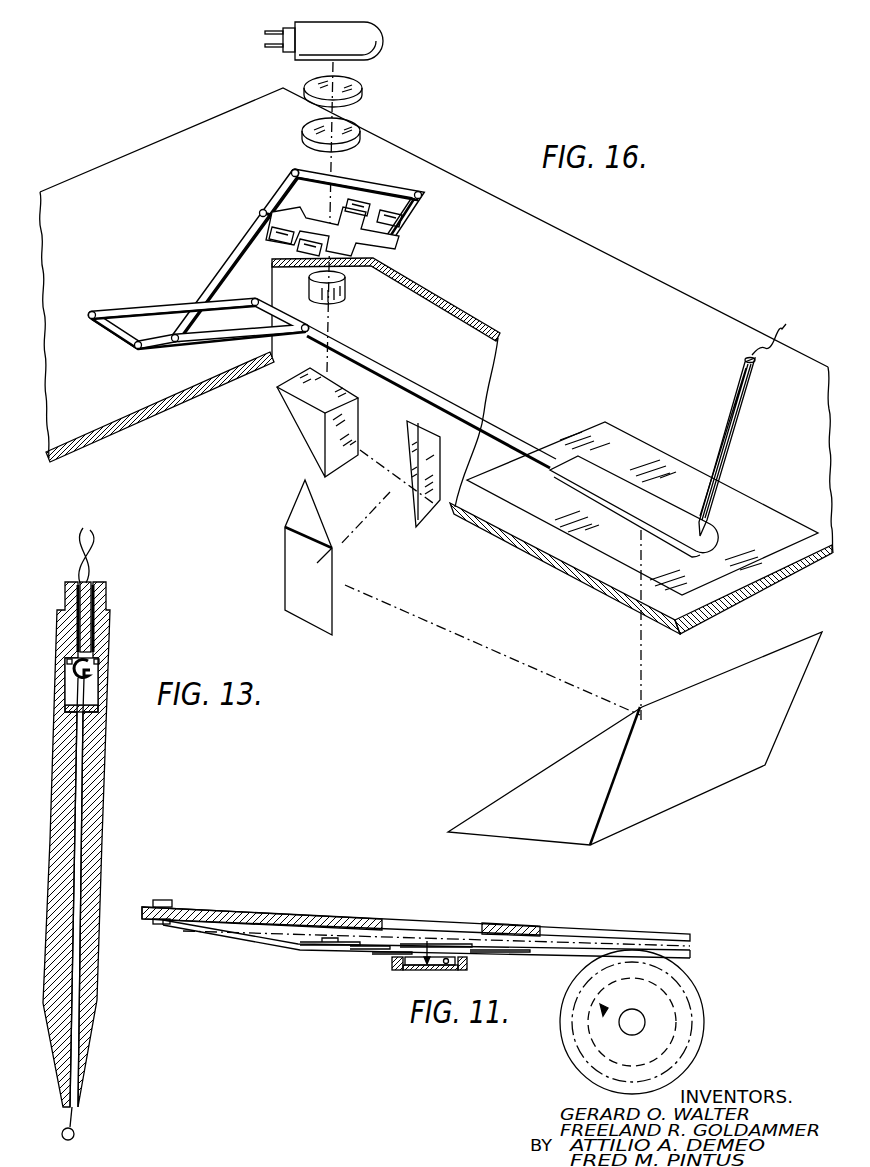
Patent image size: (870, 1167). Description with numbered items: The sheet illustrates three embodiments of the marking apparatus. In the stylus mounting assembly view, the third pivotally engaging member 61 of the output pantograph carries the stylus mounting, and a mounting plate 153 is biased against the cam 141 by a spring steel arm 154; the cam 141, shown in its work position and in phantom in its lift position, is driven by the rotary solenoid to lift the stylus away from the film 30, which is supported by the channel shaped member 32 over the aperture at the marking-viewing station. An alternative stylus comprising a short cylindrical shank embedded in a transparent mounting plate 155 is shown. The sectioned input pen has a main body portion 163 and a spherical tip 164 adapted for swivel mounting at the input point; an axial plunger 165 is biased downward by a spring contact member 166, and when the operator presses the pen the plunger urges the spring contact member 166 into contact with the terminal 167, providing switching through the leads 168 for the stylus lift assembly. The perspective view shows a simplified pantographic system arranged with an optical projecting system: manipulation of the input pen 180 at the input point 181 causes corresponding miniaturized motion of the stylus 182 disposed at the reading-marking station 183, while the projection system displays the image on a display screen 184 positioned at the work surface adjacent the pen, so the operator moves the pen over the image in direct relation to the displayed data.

In FIG. 16, the reading-marking station 183 is at (408, 168).
In FIG. 16, the stylus 182 is at (360, 246).
In FIG. 16, the display screen 184 is at (655, 462).
In FIG. 16, the input pen 180 is at (732, 466).
In FIG. 16, the input point 181 is at (710, 532).
In FIG. 13, the leads 168 is at (96, 559).
In FIG. 13, the terminal 167 is at (100, 660).
In FIG. 13, the spring contact member 166 is at (65, 688).
In FIG. 13, the main body portion 163 is at (97, 800).
In FIG. 13, the axial plunger 165 is at (79, 890).
In FIG. 13, the spherical tip 164 is at (75, 1133).
In FIG. 11, the third pivotally engaging member 61 is at (288, 915).
In FIG. 11, the spring steel arm 154 is at (262, 939).
In FIG. 11, the mounting plate 153 is at (358, 953).
In FIG. 11, the transparent mounting plate 155 is at (446, 957).
In FIG. 11, the channel shaped member 32 is at (398, 971).
In FIG. 11, the film 30 is at (443, 963).
In FIG. 11, the cam 141 is at (566, 1055).